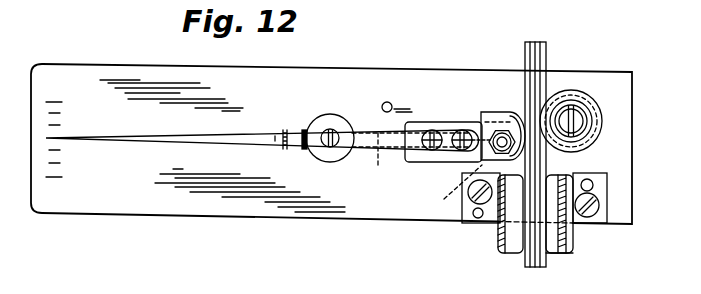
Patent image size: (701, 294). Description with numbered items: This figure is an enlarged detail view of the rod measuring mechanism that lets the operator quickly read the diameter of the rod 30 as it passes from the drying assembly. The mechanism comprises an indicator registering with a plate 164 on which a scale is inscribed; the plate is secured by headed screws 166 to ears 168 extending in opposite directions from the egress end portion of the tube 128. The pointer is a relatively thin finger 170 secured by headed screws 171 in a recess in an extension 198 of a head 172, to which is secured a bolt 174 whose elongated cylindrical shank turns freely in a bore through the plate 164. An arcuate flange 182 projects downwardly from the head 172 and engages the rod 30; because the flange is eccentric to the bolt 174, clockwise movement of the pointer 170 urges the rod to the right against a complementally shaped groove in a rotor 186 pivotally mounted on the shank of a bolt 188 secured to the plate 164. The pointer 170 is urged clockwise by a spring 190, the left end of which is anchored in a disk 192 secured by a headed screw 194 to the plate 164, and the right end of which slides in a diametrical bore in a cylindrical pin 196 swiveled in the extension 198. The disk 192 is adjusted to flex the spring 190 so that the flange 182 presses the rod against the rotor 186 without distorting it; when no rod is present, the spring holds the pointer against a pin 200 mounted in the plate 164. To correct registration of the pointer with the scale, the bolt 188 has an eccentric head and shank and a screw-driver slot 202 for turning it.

The rod 30 is at (538, 262).
The tube 128 is at (558, 232).
The plate 164 is at (115, 203).
The headed screws 166 is at (478, 218).
The ears 168 is at (462, 219).
The finger 170 is at (137, 137).
The headed screws 171 is at (459, 150).
The head 172 is at (500, 113).
The bolt 174 is at (481, 137).
The arcuate flange 182 is at (508, 128).
The rotor 186 is at (594, 147).
The bolt 188 is at (587, 121).
The spring 190 is at (411, 163).
The disk 192 is at (326, 114).
The headed screw 194 is at (327, 148).
The cylindrical pin 196 is at (447, 190).
The extension 198 is at (419, 122).
The pin 200 is at (386, 102).
The screw-driver slot 202 is at (577, 116).